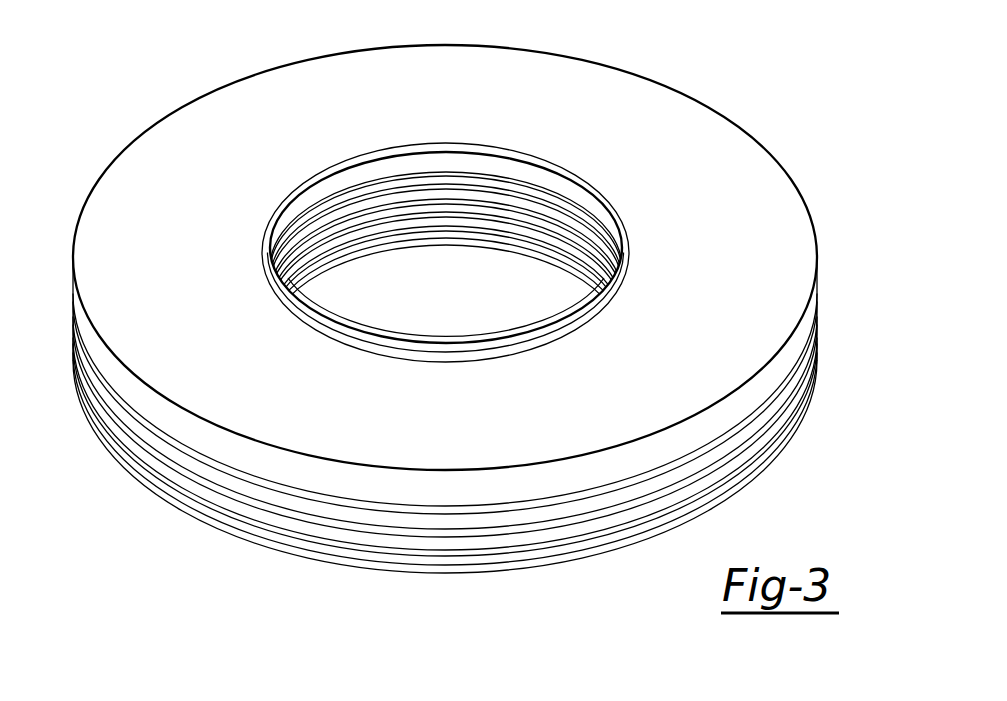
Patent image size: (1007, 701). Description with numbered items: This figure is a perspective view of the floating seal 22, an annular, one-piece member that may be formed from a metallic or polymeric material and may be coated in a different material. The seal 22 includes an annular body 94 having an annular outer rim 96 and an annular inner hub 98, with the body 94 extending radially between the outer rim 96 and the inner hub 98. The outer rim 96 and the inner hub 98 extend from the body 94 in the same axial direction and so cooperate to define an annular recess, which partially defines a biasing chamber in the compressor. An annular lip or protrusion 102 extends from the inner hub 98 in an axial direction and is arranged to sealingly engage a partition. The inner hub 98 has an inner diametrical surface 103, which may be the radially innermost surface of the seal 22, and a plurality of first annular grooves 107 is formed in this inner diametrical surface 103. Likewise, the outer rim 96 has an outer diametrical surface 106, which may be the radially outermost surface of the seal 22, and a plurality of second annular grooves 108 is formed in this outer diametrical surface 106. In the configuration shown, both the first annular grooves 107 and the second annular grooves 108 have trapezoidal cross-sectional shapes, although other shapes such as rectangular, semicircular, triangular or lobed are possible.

The seal 22 is at (108, 136).
The annular body 94 is at (706, 138).
The annular outer rim 96 is at (763, 476).
The annular inner hub 98 is at (553, 215).
The annular lip 102 is at (387, 151).
The inner diametrical surface 103 is at (374, 170).
The outer diametrical surface 106 is at (345, 562).
The first annular grooves 107 is at (520, 184).
The second annular grooves 108 is at (477, 562).